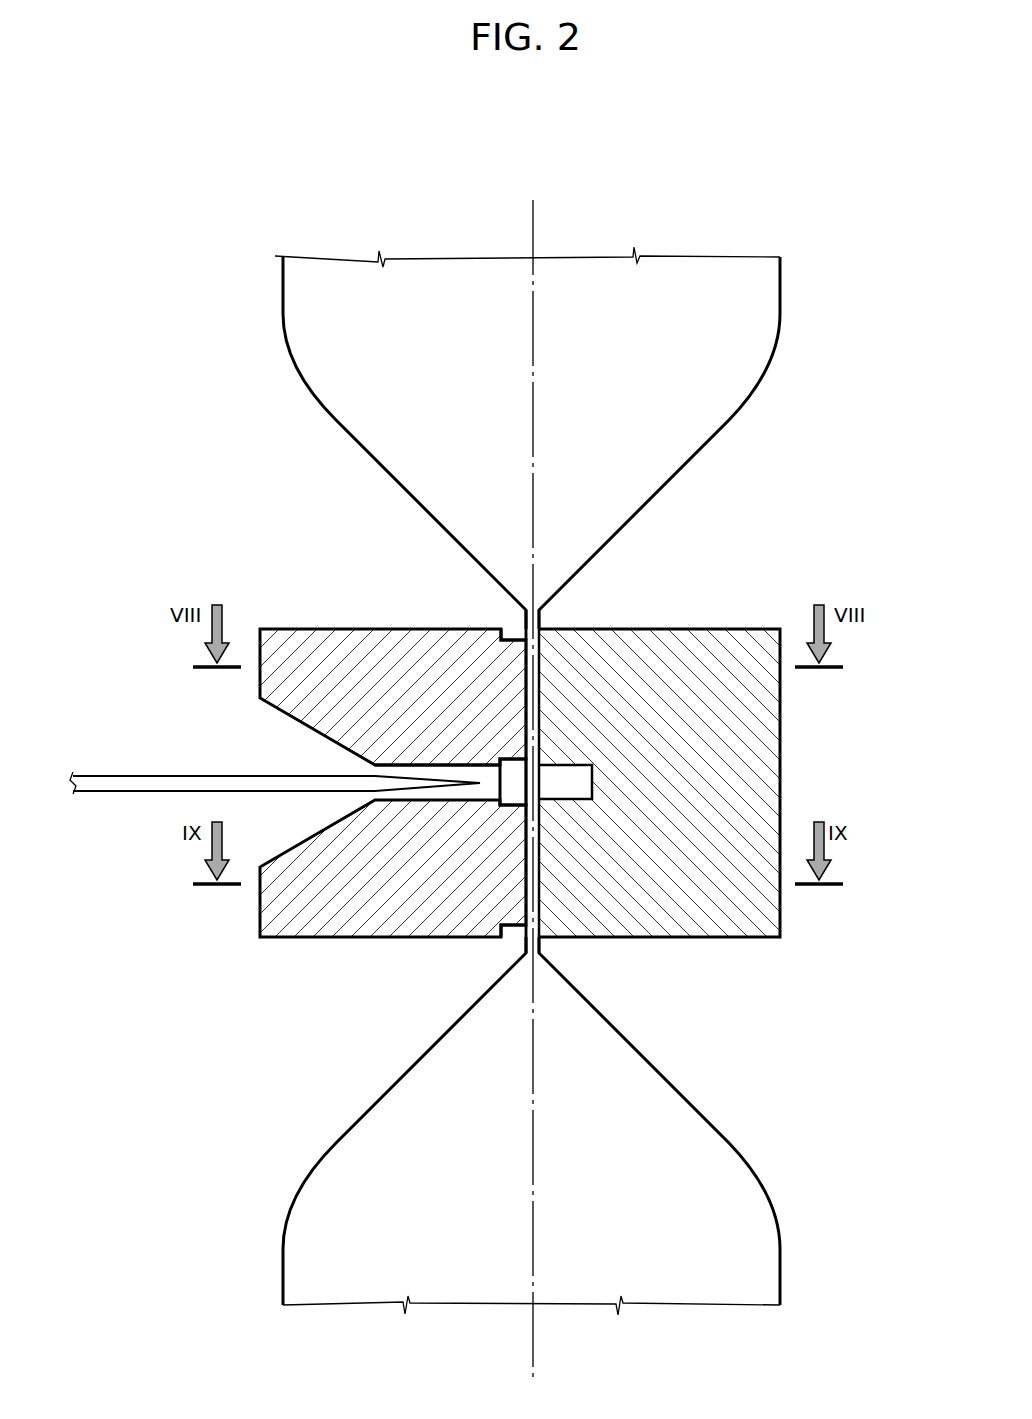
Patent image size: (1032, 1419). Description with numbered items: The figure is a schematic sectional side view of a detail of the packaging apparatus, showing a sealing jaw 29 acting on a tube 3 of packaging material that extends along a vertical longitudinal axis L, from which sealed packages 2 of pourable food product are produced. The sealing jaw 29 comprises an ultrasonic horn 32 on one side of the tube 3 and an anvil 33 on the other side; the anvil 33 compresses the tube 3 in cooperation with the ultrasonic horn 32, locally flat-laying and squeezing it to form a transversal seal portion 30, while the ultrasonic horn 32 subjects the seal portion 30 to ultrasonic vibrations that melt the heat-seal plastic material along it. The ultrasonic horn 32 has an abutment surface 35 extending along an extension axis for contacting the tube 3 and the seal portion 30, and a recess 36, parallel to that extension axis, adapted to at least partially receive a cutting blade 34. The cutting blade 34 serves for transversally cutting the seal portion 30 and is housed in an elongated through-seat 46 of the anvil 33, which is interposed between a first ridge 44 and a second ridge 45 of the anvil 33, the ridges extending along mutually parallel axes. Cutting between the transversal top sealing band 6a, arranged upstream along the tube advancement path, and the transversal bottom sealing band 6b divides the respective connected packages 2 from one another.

The sealed package 2 is at (763, 1228).
The tube 3 is at (760, 356).
The transversal top sealing band 6a is at (522, 628).
The transversal bottom sealing band 6b is at (528, 923).
The sealing jaw 29 is at (415, 818).
The transversal seal portion 30 is at (518, 787).
The ultrasonic horn 32 is at (631, 760).
The anvil 33 is at (230, 717).
The cutting blade 34 is at (103, 791).
The abutment surface 35 is at (538, 690).
The recess 36 is at (570, 782).
The first ridge 44 is at (508, 652).
The second ridge 45 is at (515, 883).
The elongated through-seat 46 is at (435, 768).
The longitudinal axis L is at (533, 226).